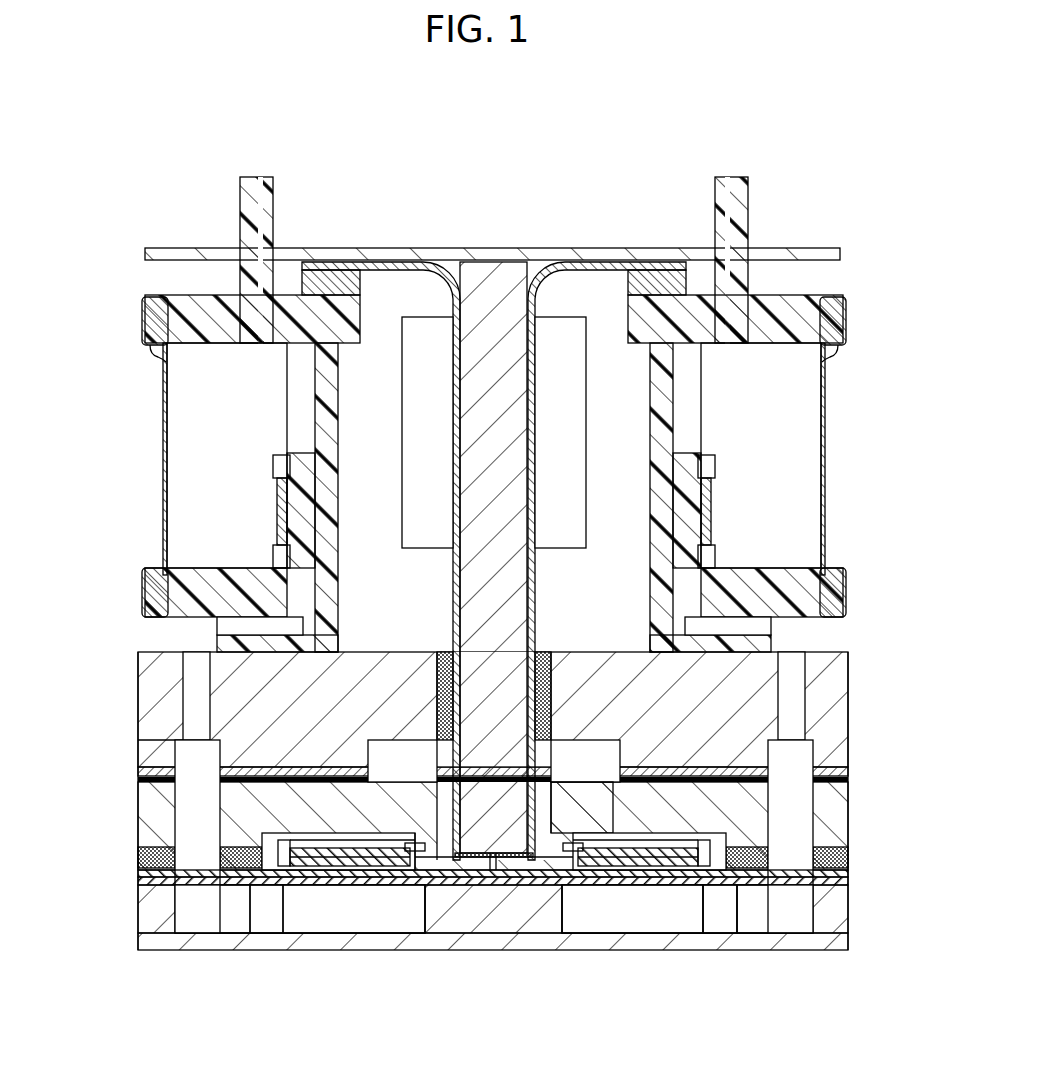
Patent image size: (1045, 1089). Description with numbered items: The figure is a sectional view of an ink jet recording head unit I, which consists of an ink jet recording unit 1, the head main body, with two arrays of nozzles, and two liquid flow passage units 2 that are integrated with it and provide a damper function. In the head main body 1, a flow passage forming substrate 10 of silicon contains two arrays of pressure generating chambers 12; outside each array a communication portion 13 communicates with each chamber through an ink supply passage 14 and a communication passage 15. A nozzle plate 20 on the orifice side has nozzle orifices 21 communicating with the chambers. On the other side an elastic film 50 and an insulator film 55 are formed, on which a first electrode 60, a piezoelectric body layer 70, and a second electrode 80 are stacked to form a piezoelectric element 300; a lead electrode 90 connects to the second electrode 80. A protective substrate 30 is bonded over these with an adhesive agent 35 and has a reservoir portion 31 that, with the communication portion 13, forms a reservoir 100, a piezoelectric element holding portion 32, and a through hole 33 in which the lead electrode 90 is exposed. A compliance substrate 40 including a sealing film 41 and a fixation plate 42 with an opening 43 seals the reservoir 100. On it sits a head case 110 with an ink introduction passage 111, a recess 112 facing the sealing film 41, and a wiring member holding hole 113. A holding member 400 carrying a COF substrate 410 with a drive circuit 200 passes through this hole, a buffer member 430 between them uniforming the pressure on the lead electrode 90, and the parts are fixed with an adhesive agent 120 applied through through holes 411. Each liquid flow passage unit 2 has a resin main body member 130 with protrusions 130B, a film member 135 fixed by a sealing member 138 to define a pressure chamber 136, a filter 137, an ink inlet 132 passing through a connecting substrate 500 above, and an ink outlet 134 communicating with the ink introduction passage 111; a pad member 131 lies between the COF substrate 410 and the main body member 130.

The ink jet recording unit 1 is at (860, 717).
The liquid flow passage unit 2 is at (845, 478).
The ink jet recording head unit I is at (812, 132).
The flow passage forming substrate 10 is at (165, 940).
The pressure generating chamber 12 is at (328, 925).
The communication portion 13 is at (160, 915).
The ink supply passage 14 is at (275, 930).
The communication passage 15 is at (232, 930).
The nozzle plate 20 is at (740, 942).
The nozzle orifice 21 is at (428, 920).
The protective substrate 30 is at (745, 818).
The reservoir portion 31 is at (150, 880).
The piezoelectric element holding portion 32 is at (270, 835).
The through hole 33 is at (400, 845).
The adhesive agent 35 is at (150, 857).
The compliance substrate 40 is at (84, 762).
The sealing film 41 is at (150, 780).
The fixation plate 42 is at (150, 768).
The opening 43 is at (225, 830).
The elastic film 50 is at (622, 915).
The insulator film 55 is at (705, 915).
The first electrode 60 is at (598, 900).
The piezoelectric body layer 70 is at (300, 836).
The second electrode 80 is at (345, 846).
The lead electrode 90 is at (470, 880).
The reservoir 100 is at (84, 890).
The head case 110 is at (150, 745).
The ink introduction passage 111 is at (183, 660).
The recess 112 is at (183, 703).
The wiring member holding hole 113 is at (452, 600).
The adhesive agent 120 is at (560, 700).
The main body member 130 is at (188, 303).
The protrusion 130B is at (150, 311).
The pad member 131 is at (320, 280).
The ink inlet 132 is at (260, 185).
The ink outlet 134 is at (193, 638).
The film member 135 is at (163, 472).
The pressure chamber 136 is at (185, 433).
The filter 137 is at (275, 490).
The sealing member 138 is at (146, 337).
The drive circuit 200 is at (410, 320).
The piezoelectric element 300 is at (275, 590).
The holding member 400 is at (488, 280).
The COF substrate 410 is at (454, 290).
The through hole 411 is at (545, 720).
The buffer member 430 is at (500, 865).
The connecting substrate 500 is at (776, 250).